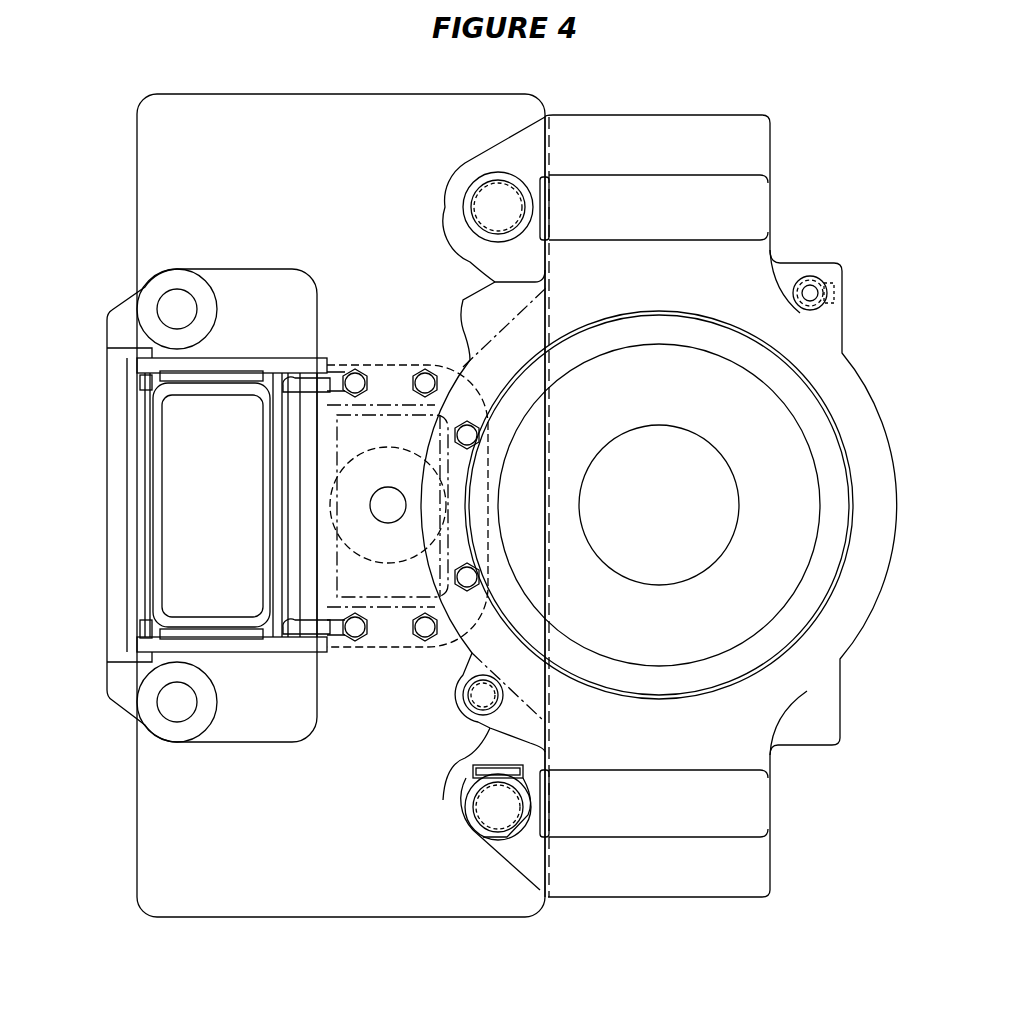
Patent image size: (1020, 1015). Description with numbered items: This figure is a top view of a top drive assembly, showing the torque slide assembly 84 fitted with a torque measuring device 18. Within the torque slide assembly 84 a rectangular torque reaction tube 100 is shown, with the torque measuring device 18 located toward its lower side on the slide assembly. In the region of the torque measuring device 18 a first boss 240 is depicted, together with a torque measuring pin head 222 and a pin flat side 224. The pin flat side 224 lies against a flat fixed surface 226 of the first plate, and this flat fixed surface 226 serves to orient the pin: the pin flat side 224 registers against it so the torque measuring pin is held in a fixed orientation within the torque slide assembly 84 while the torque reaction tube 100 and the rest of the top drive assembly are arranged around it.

The torque slide assembly 84 is at (137, 800).
The torque reaction tube 100 is at (153, 507).
The torque measuring device 18 is at (445, 752).
The flat fixed surface 226 is at (473, 772).
The pin flat side 224 is at (466, 788).
The first boss 240 is at (452, 812).
The torque measuring pin head 222 is at (483, 838).